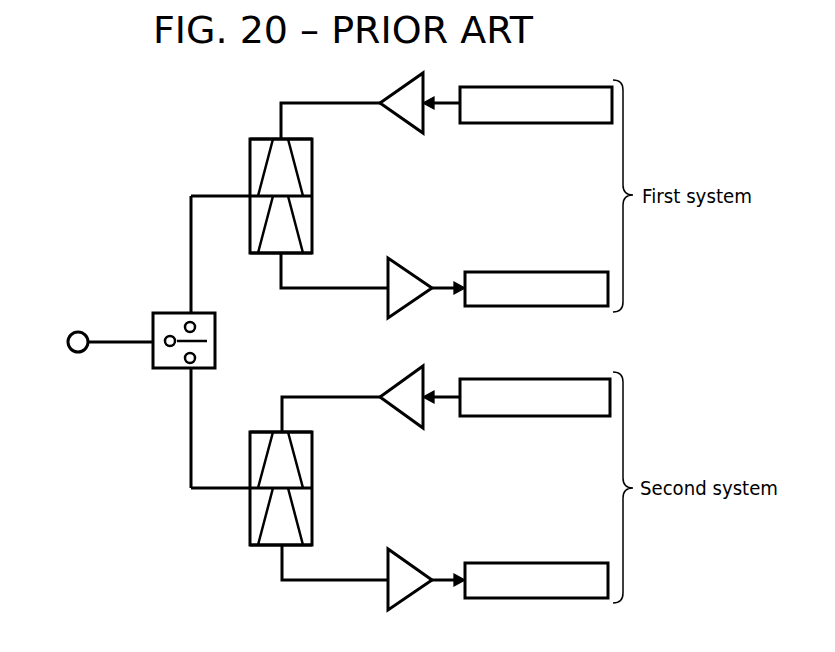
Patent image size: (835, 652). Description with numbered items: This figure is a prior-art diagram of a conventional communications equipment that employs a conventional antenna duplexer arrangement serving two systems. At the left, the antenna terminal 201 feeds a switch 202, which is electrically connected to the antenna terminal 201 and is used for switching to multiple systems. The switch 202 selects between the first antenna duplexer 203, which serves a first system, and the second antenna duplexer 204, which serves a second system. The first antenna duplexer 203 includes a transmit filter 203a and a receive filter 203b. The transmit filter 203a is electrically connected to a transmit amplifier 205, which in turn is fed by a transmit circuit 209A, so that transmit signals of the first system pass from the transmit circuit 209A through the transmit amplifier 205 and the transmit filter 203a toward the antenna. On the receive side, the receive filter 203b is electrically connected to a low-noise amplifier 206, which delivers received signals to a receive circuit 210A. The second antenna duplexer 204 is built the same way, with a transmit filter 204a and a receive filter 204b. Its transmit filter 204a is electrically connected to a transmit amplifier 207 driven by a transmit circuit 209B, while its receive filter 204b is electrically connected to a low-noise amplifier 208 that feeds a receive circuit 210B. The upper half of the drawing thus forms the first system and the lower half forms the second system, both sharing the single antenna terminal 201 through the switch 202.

The antenna terminal 201 is at (73, 331).
The switch 202 is at (170, 313).
The first antenna duplexer 203 is at (312, 132).
The transmit filter 203a is at (257, 137).
The receive filter 203b is at (260, 256).
The second antenna duplexer 204 is at (312, 424).
The transmit filter 204a is at (258, 430).
The receive filter 204b is at (262, 548).
The transmit amplifier 205 is at (425, 129).
The low-noise amplifier 206 is at (410, 306).
The transmit amplifier 207 is at (425, 423).
The low-noise amplifier 208 is at (410, 598).
The transmit circuit 209A is at (520, 87).
The transmit circuit 209B is at (518, 380).
The receive circuit 210A is at (518, 268).
The receive circuit 210B is at (518, 560).